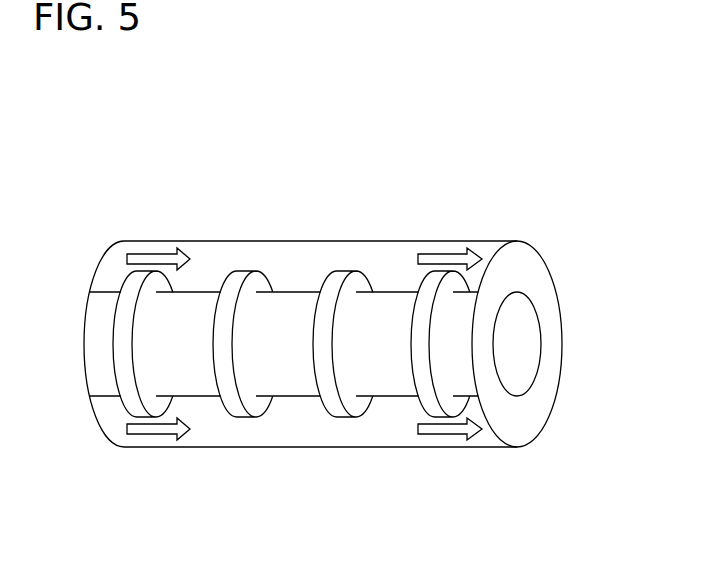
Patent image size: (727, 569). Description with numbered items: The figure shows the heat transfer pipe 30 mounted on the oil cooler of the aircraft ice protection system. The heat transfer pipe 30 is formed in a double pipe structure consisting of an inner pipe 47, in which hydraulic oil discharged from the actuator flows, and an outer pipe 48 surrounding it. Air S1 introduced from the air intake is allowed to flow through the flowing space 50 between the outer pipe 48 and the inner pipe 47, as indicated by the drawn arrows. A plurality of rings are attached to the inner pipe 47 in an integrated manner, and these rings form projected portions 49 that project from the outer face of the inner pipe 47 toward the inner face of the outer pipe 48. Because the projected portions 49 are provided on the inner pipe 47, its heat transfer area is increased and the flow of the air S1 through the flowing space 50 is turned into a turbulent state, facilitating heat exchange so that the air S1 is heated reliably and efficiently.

The heat transfer pipe 30 is at (612, 160).
The inner pipe 47 is at (531, 298).
The outer pipe 48 is at (503, 240).
The projected portions 49 is at (127, 305).
The flowing space 50 is at (302, 252).
The air S1 is at (153, 258).